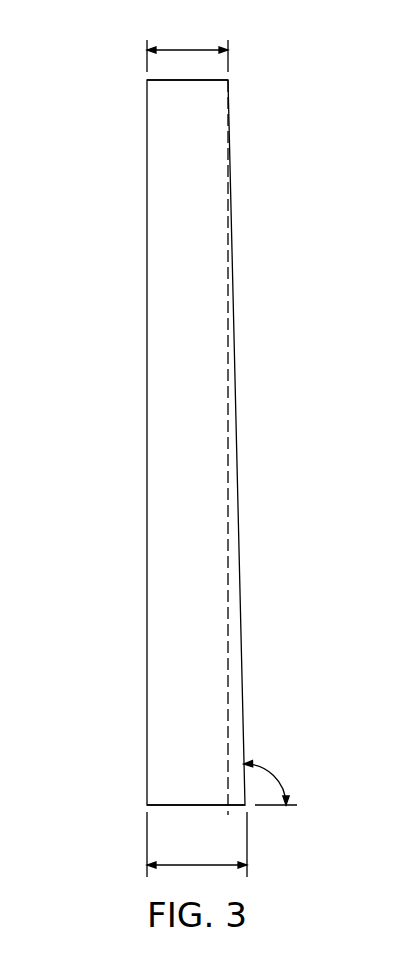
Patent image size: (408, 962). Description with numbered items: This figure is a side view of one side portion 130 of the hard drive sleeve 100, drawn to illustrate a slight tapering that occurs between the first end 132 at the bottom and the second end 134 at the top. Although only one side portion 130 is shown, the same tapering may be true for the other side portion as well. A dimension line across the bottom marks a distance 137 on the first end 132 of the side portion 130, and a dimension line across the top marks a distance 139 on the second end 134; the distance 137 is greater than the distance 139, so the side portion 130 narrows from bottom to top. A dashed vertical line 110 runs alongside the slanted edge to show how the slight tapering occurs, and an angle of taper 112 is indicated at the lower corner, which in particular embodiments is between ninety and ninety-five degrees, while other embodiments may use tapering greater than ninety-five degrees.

The hard drive sleeve 100 is at (292, 215).
The vertical line 110 is at (228, 613).
The angle of taper 112 is at (277, 775).
The side portion 130 is at (203, 456).
The first end 132 is at (132, 808).
The second end 134 is at (132, 75).
The distance 137 is at (197, 862).
The distance 139 is at (190, 47).